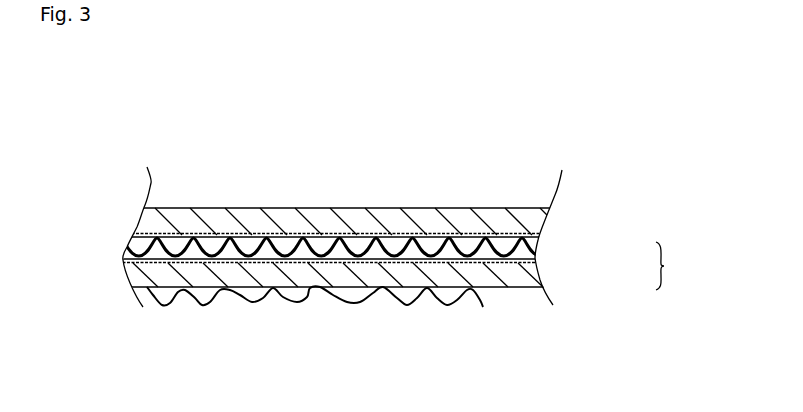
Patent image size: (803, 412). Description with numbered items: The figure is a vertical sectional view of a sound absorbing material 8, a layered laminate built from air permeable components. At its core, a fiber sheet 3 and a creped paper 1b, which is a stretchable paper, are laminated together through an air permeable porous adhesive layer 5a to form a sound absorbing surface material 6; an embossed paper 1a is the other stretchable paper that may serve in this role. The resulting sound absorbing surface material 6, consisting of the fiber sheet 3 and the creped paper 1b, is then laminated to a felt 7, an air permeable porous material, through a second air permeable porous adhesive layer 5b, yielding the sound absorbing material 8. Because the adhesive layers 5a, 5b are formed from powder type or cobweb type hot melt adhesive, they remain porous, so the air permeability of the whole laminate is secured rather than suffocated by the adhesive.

The sound absorbing material 8 is at (410, 183).
The felt 7 is at (492, 208).
The porous adhesive layer 5b is at (137, 236).
The porous adhesive layer 5a is at (125, 260).
The creped paper 1b is at (536, 243).
The fiber sheet 3 is at (500, 287).
The embossed paper 1a is at (203, 316).
The sound absorbing surface material 6 is at (670, 266).